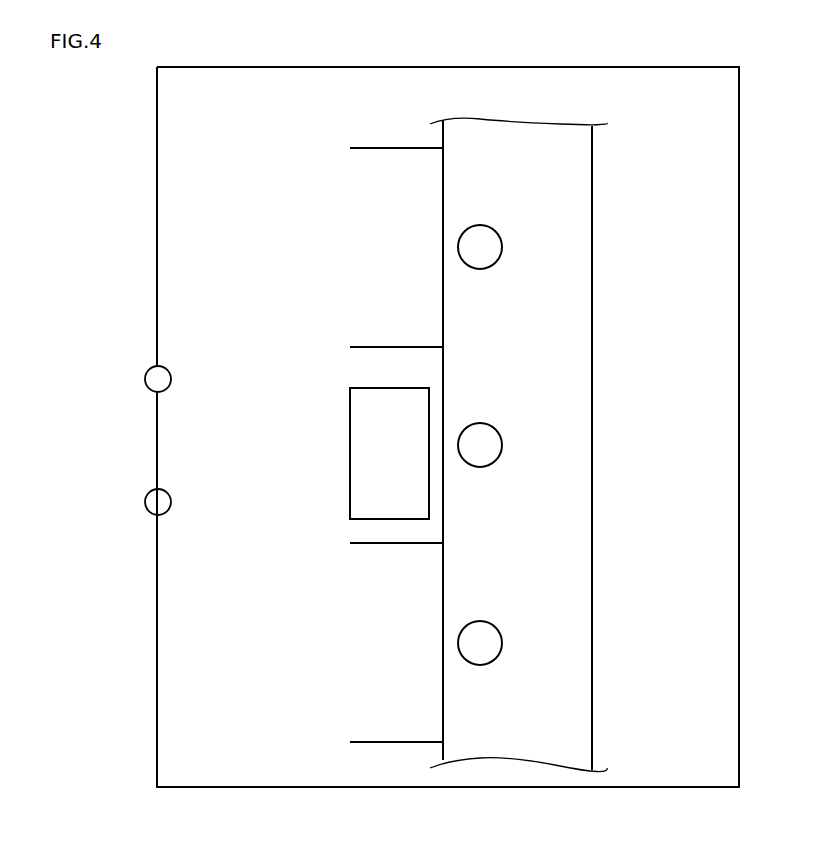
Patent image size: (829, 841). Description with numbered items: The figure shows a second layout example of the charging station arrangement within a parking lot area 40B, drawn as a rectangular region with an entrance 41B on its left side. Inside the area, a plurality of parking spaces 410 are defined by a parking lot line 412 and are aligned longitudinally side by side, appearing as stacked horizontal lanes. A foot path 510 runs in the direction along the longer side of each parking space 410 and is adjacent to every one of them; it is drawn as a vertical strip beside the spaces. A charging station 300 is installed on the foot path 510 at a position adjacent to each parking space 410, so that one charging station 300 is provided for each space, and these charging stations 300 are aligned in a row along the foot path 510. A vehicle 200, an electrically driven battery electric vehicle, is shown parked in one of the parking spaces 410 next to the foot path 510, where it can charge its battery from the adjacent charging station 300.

The parking lot area 40B is at (685, 67).
The entrance 41B is at (155, 450).
The foot path 510 is at (467, 125).
The parking space 410 is at (358, 182).
The parking lot line 412 is at (395, 345).
The vehicle 200 is at (350, 457).
The charging station 300 is at (490, 226).